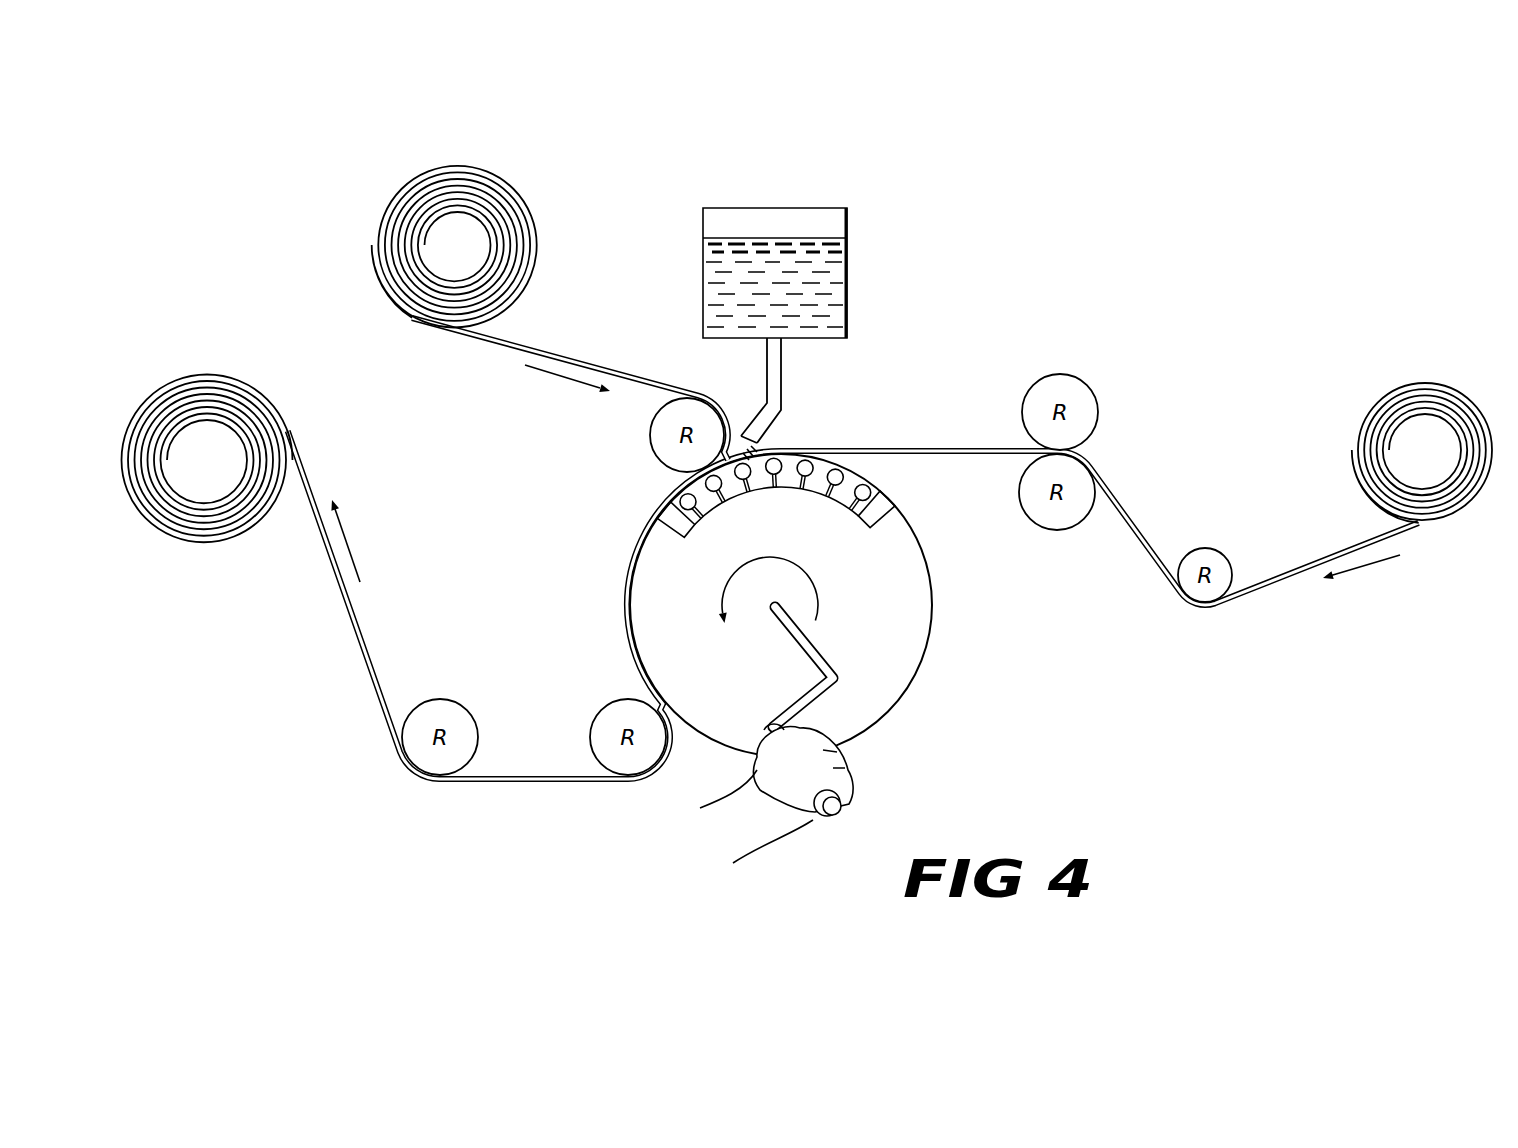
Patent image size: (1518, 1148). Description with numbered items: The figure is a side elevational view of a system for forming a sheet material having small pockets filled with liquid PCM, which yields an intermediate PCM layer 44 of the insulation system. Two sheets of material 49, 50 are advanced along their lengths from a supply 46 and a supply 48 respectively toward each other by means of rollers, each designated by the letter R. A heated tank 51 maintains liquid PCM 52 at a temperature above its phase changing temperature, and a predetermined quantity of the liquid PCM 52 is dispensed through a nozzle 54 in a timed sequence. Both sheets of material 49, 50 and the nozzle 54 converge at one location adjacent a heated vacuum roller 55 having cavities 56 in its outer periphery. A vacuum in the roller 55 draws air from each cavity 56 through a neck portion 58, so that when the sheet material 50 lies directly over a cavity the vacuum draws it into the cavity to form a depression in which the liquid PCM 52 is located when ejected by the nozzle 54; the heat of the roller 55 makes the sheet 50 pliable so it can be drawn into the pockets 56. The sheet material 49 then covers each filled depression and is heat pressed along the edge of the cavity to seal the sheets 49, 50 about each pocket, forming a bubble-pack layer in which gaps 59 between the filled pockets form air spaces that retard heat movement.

The intermediate PCM layer embodiment 44 is at (354, 606).
The supply 46 is at (481, 156).
The supply 48 is at (1414, 370).
The sheet of material 49 is at (560, 352).
The sheet of material 50 is at (946, 446).
The heated tank 51 is at (741, 188).
The liquid PCM 52 is at (842, 286).
The nozzle 54 is at (782, 384).
The heated vacuum roller 55 is at (962, 591).
The cavities 56 is at (872, 494).
The neck portion 58 is at (840, 488).
The gaps 59 is at (229, 370).